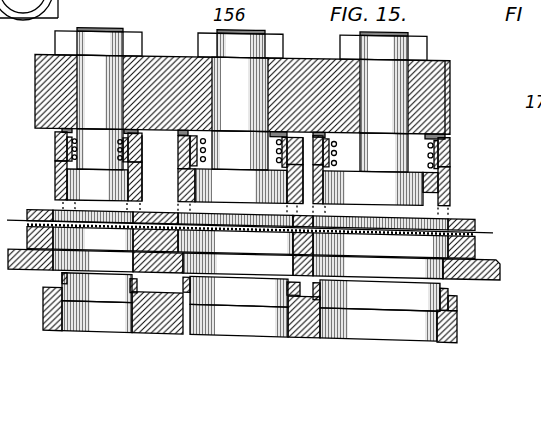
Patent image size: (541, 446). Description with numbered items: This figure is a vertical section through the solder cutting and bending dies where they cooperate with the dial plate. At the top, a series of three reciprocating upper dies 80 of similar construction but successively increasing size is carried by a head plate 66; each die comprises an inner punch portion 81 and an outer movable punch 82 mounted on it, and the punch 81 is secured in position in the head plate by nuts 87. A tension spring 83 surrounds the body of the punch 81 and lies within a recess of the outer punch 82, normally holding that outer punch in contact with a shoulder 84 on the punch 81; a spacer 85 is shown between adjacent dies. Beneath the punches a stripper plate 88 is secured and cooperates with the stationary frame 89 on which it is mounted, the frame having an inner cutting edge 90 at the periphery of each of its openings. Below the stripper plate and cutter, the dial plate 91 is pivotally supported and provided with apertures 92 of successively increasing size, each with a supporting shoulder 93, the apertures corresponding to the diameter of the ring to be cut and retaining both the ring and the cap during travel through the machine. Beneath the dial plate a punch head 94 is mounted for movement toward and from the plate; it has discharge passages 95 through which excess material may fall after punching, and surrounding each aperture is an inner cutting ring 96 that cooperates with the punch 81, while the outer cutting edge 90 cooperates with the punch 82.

The clamping block 66 is at (166, 60).
The nuts 87 is at (73, 41).
The inner punch portion 81 is at (340, 52).
The reciprocating upper dies 80 is at (472, 166).
The outer movable punch 82 is at (57, 186).
The tension spring 83 is at (57, 135).
The shoulder 84 is at (124, 160).
The spacer 85 is at (190, 138).
The stripper plate 88 is at (474, 217).
The stationary frame 89 is at (476, 232).
The inner cutting edge 90 is at (182, 237).
The dial plate 91 is at (462, 270).
The apertures 92 is at (330, 261).
The supporting shoulder 93 is at (62, 285).
The punch head 94 is at (167, 325).
The discharge passages 95 is at (98, 319).
The inner cutting ring 96 is at (255, 292).